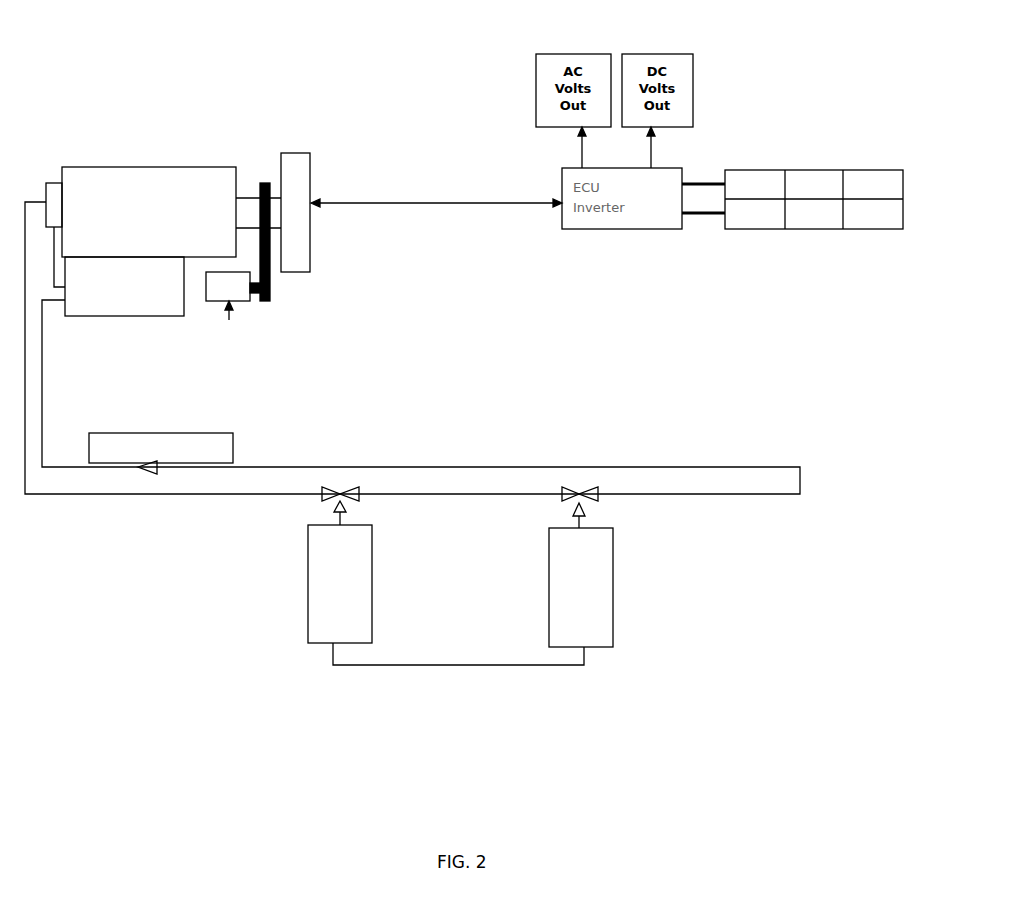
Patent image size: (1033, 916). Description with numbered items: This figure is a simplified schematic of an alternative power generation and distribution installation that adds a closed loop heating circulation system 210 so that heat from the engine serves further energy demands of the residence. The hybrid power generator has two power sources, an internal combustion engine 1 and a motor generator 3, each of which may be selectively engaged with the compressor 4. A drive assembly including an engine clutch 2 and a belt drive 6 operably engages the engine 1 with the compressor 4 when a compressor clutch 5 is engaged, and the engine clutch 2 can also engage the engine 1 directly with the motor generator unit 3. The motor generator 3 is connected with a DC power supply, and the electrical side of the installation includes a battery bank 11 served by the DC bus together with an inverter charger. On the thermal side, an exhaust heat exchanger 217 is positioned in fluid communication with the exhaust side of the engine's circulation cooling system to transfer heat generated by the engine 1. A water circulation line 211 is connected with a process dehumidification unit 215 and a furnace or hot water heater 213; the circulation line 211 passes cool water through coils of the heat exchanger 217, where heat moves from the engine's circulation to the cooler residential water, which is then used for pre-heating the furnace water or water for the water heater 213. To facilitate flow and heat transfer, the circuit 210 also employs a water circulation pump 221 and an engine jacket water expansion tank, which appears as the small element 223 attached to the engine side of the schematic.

The internal combustion engine 1 is at (154, 221).
The engine clutch 2 is at (256, 264).
The motor generator 3 is at (305, 183).
The compressor 4 is at (227, 295).
The compressor clutch 5 is at (257, 293).
The belt drive 6 is at (270, 273).
The battery bank 11 is at (828, 229).
The closed loop heating circulation system 210 is at (641, 456).
The water circulation line 211 is at (752, 478).
The furnace or hot water heater 213 is at (581, 567).
The process dehumidification unit 215 is at (446, 576).
The exhaust heat exchanger 217 is at (118, 308).
The water circulation pump 221 is at (228, 447).
The fuel injector 223 is at (55, 183).